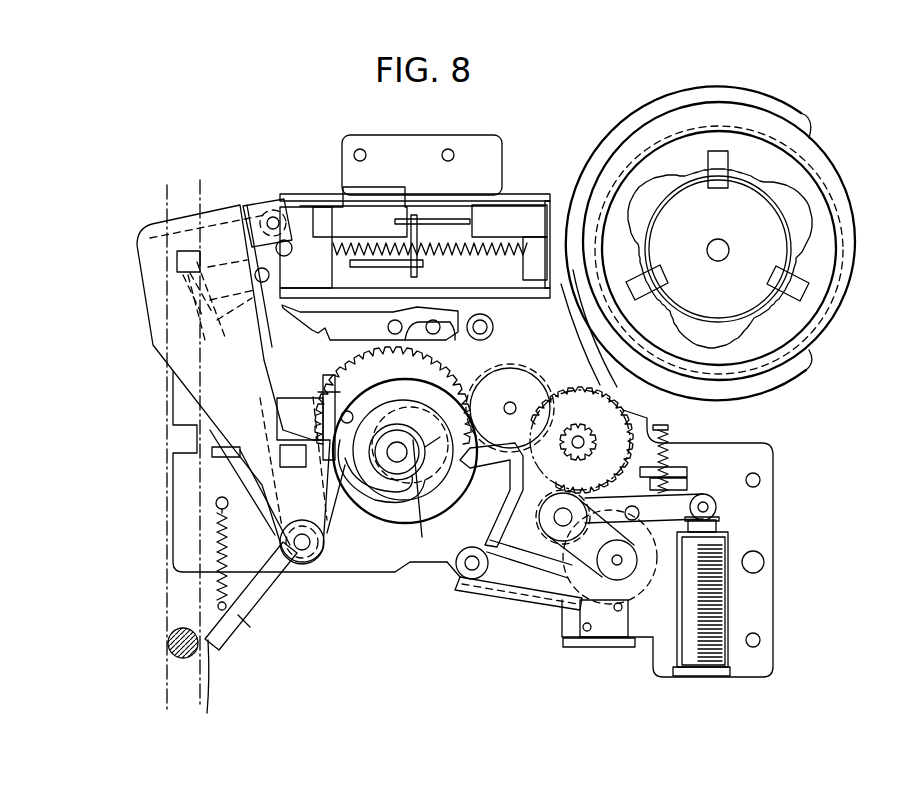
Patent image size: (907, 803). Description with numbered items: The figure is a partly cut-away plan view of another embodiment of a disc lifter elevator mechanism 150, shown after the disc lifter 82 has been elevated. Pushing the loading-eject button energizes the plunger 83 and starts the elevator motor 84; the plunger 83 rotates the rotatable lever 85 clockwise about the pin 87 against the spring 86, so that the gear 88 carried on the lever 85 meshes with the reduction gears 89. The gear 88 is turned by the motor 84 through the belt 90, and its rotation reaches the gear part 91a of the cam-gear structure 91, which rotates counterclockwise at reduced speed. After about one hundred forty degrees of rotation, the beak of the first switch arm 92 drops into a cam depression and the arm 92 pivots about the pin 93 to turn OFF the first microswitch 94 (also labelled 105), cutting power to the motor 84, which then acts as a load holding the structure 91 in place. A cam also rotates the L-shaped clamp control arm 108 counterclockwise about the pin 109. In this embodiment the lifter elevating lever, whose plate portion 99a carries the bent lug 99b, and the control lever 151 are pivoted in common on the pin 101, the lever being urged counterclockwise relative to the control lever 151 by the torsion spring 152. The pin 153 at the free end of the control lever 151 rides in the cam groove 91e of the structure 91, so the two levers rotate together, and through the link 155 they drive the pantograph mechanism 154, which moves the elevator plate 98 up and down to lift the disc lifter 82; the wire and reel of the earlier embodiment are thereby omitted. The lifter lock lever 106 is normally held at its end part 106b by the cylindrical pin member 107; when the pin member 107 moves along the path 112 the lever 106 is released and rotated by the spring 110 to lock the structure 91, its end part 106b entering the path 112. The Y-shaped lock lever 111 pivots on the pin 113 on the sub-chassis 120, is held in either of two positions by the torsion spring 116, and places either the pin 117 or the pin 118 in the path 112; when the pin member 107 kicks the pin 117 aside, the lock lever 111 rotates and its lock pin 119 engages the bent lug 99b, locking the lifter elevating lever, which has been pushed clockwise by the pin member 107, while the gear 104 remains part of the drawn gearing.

The disc lifter 82 is at (848, 205).
The plunger 83 is at (722, 598).
The elevator motor 84 is at (649, 588).
The rotatable lever 85 is at (695, 500).
The spring 86 is at (670, 455).
The pin 87 is at (634, 510).
The gear 88 is at (552, 492).
The reduction gears 89 is at (565, 386).
The belt 90 is at (565, 565).
The cam-gear structure 91 is at (319, 371).
The gear part 91a is at (326, 334).
The cam groove 91e is at (392, 488).
The first switch arm 92 is at (510, 575).
The pin 93 is at (462, 573).
The first microswitch 94 is at (600, 628).
The elevator plate 98 is at (668, 110).
The plate 99a is at (143, 300).
The bent lug 99b is at (245, 205).
The pin 101 is at (305, 555).
The gear 104 is at (520, 455).
The block 105 is at (596, 693).
The lifter lock lever 106 is at (264, 596).
The end part 106b is at (207, 700).
The pin member 107 is at (168, 648).
The clamp control arm 108 is at (418, 335).
The pin 109 is at (494, 328).
The spring 110 is at (218, 542).
The lock lever 111 is at (268, 300).
The path 112 is at (170, 542).
The pin 113 is at (254, 275).
The torsion spring 116 is at (205, 320).
The pin 117 is at (177, 262).
The pin 118 is at (215, 320).
The lock pin 119 is at (403, 247).
The sub-chassis 120 is at (774, 540).
The disc lifter elevator mechanism 150 is at (553, 96).
The control lever 151 is at (287, 397).
The torsion spring 152 is at (232, 460).
The pin 153 is at (300, 432).
The pantograph mechanism 154 is at (516, 183).
The link 155 is at (326, 205).